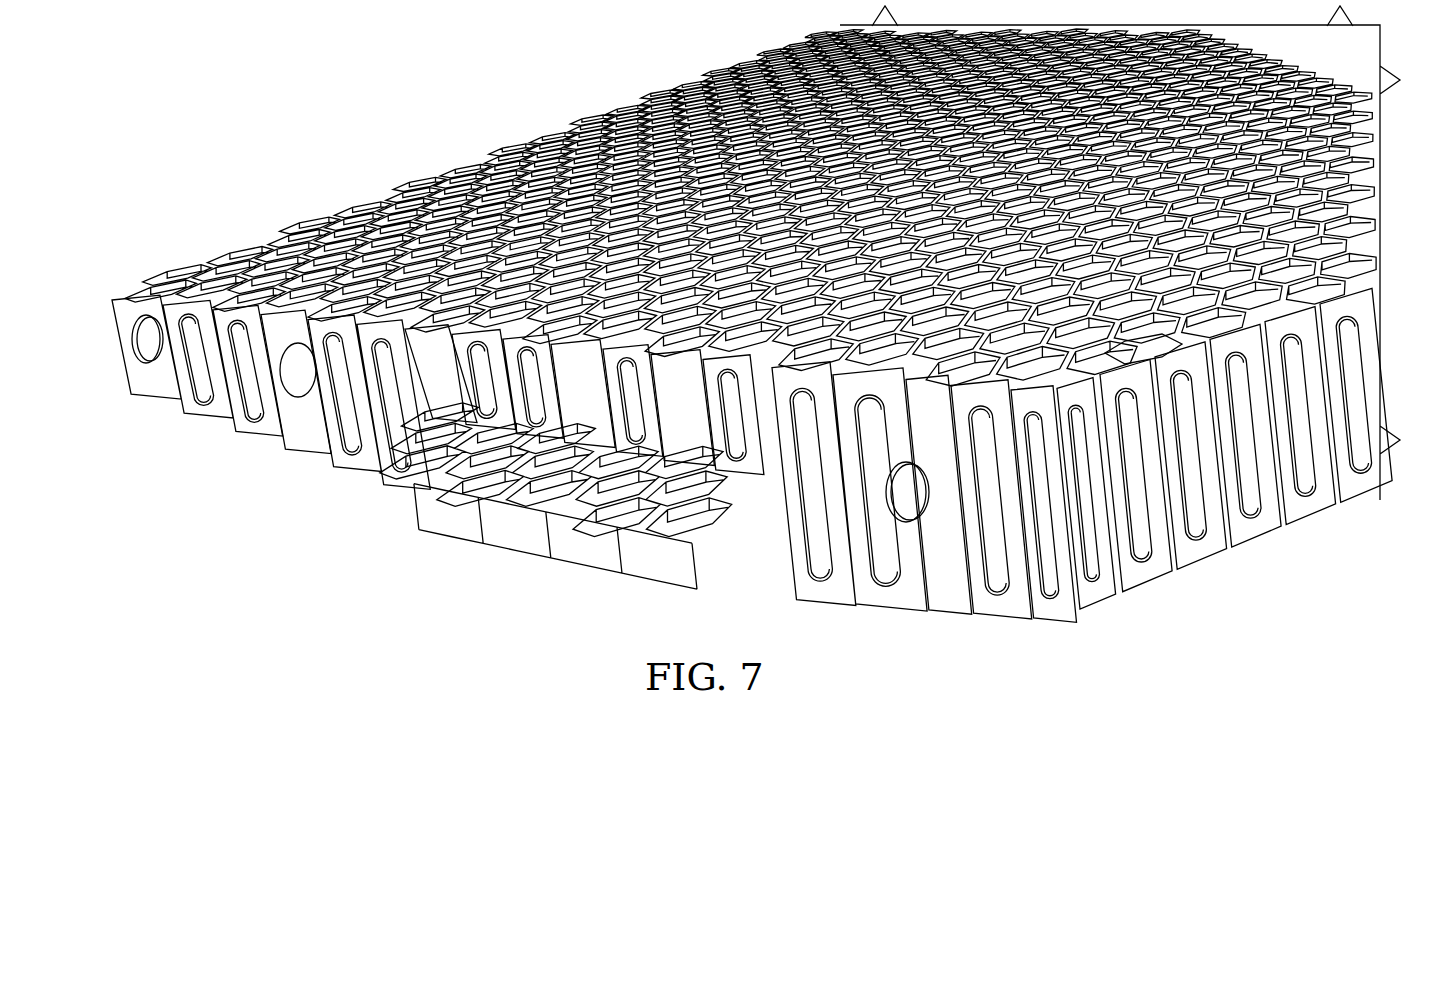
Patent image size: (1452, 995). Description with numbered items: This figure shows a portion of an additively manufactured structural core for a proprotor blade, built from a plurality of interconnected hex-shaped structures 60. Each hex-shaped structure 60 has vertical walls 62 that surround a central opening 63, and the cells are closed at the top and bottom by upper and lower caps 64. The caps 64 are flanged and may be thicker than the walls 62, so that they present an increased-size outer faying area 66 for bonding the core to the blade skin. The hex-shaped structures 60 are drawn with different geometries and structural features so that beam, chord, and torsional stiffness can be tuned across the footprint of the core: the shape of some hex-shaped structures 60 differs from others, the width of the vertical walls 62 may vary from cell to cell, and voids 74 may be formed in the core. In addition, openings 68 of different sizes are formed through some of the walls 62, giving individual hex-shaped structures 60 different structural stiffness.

The hex-shaped structures 60 is at (416, 500).
The vertical walls 62 is at (315, 442).
The central opening 63 is at (1140, 350).
The upper and lower caps 64 is at (1237, 344).
The outer faying area 66 is at (1375, 150).
The openings 68 is at (140, 345).
The voids 74 is at (592, 483).